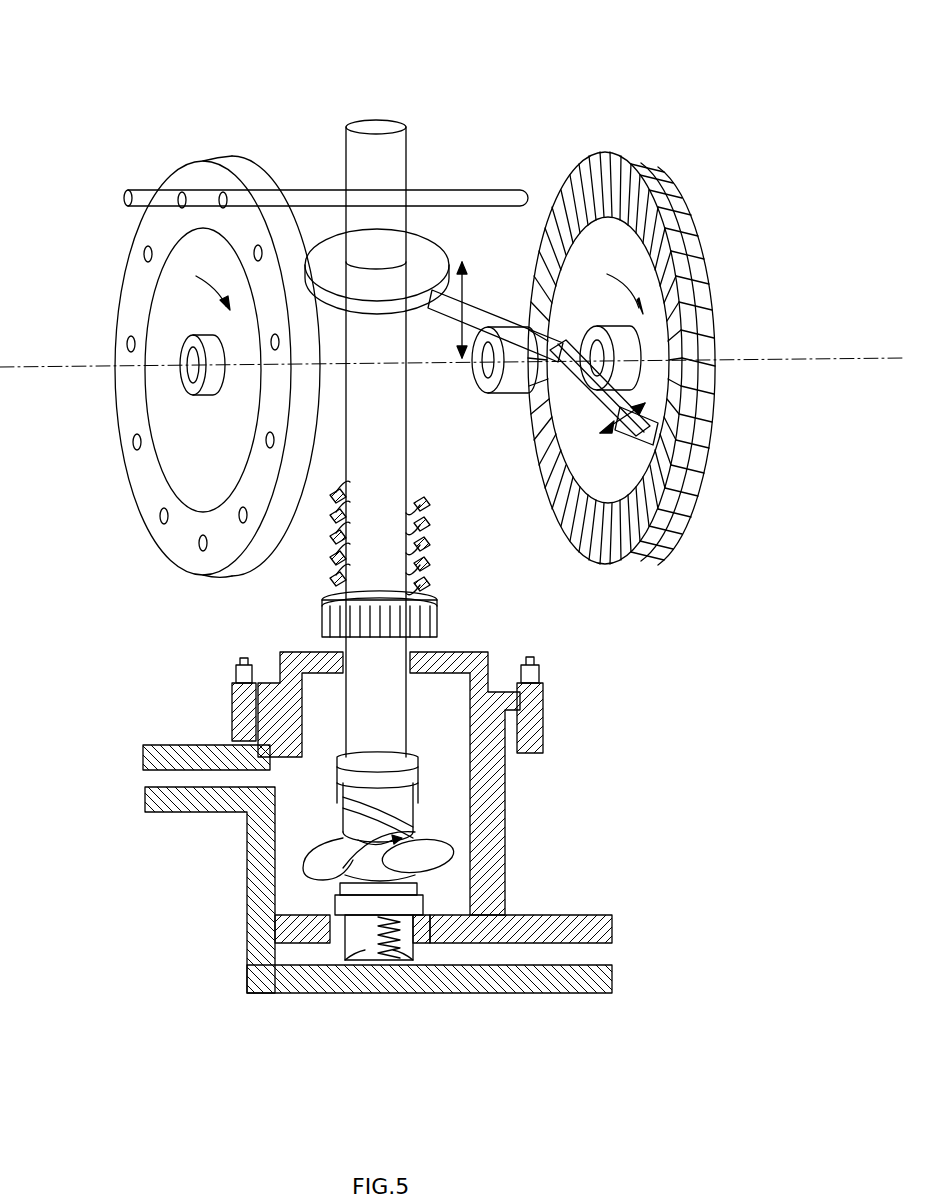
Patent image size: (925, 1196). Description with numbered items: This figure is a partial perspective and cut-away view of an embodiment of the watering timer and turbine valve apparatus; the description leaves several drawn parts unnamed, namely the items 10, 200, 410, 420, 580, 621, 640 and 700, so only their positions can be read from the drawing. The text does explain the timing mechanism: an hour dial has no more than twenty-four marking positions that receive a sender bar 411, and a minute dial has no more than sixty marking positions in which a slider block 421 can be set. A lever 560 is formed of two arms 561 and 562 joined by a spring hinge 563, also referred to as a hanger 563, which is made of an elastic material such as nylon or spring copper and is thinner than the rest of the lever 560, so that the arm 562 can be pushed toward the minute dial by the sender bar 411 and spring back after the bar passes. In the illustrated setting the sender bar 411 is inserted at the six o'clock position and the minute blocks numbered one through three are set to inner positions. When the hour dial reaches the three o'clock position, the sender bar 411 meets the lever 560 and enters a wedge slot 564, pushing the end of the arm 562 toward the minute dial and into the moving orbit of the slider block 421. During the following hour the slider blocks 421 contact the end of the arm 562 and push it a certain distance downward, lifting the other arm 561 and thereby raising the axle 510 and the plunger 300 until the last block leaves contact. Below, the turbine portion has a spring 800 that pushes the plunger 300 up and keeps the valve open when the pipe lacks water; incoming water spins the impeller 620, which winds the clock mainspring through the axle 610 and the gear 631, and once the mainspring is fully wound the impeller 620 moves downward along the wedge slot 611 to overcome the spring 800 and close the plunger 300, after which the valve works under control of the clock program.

The driving device 10 is at (452, 554).
The base 200 is at (606, 990).
The plunger 300 is at (435, 940).
The driving wheel 410 is at (128, 250).
The sender bar 411 is at (132, 188).
The bevel gear 420 is at (659, 314).
The slider block 421 is at (694, 258).
The axle 510 is at (378, 118).
The lever 560 is at (488, 394).
The arm 561 is at (480, 306).
The arm 562 is at (562, 460).
The spring hinge 563 is at (559, 368).
The wedge slot 564 is at (650, 412).
The spring 580 is at (438, 544).
The axle 610 is at (488, 668).
The wedge slot 611 is at (342, 803).
The impeller 620 is at (446, 860).
The blade 621 is at (330, 840).
The gear 631 is at (436, 608).
The collar 640 is at (418, 763).
The seat 700 is at (330, 915).
The spring 800 is at (392, 962).